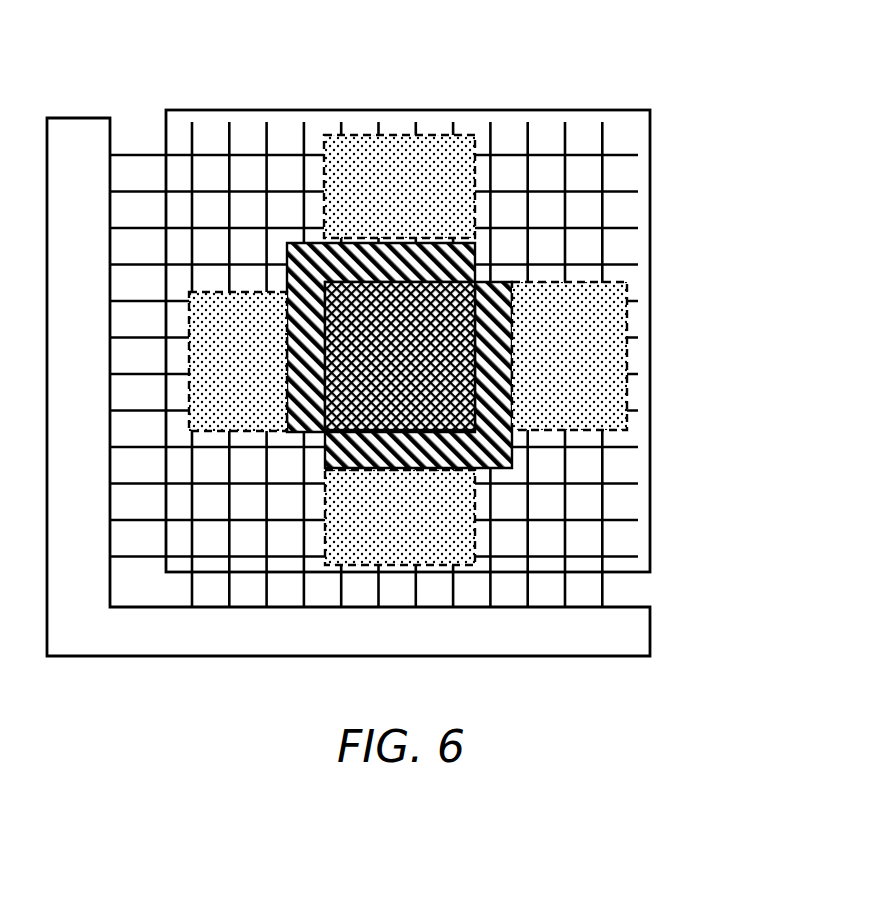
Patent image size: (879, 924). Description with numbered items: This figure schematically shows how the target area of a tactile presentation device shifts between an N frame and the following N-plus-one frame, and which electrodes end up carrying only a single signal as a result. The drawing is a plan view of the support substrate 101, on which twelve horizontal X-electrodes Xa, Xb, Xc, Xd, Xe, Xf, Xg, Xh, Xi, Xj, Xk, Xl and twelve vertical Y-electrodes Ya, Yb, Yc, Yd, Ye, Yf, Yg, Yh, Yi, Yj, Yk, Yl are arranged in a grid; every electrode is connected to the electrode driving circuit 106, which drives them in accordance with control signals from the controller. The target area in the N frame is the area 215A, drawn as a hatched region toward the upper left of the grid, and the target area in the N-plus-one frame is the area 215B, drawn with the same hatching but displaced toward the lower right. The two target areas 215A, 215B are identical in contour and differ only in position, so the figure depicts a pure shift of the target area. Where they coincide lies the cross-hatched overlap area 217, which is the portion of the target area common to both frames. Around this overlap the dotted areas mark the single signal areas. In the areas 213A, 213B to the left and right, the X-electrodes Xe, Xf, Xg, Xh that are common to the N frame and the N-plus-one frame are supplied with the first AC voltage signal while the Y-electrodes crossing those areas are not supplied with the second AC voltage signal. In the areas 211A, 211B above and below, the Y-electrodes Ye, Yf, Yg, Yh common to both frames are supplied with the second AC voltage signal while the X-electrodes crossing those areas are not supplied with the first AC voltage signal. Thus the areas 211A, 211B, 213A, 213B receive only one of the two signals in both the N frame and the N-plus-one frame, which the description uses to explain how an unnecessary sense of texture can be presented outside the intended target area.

The support substrate 101 is at (652, 132).
The electrode driving circuit 106 is at (348, 387).
The area 211A is at (399, 186).
The area 211B is at (400, 517).
The area 213A is at (238, 361).
The area 213B is at (569, 356).
The target area in the N frame 215A is at (381, 337).
The target area in the N+1 frame 215B is at (418, 375).
The overlap area 217 is at (400, 356).
The X-electrode Xa is at (636, 156).
The X-electrode Xb is at (636, 192).
The X-electrode Xc is at (636, 229).
The X-electrode Xd is at (636, 266).
The X-electrode Xe is at (636, 302).
The X-electrode Xf is at (636, 338).
The X-electrode Xg is at (636, 375).
The X-electrode Xh is at (636, 412).
The X-electrode Xi is at (636, 448).
The X-electrode Xj is at (636, 484).
The X-electrode Xk is at (636, 521).
The X-electrode Xl is at (636, 558).
The Y-electrode Ya is at (197, 128).
The Y-electrode Yb is at (234, 128).
The Y-electrode Yc is at (272, 128).
The Y-electrode Yd is at (309, 128).
The Y-electrode Ye is at (346, 128).
The Y-electrode Yf is at (383, 128).
The Y-electrode Yg is at (421, 128).
The Y-electrode Yh is at (458, 128).
The Y-electrode Yi is at (495, 128).
The Y-electrode Yj is at (532, 128).
The Y-electrode Yk is at (570, 128).
The Y-electrode Yl is at (607, 128).